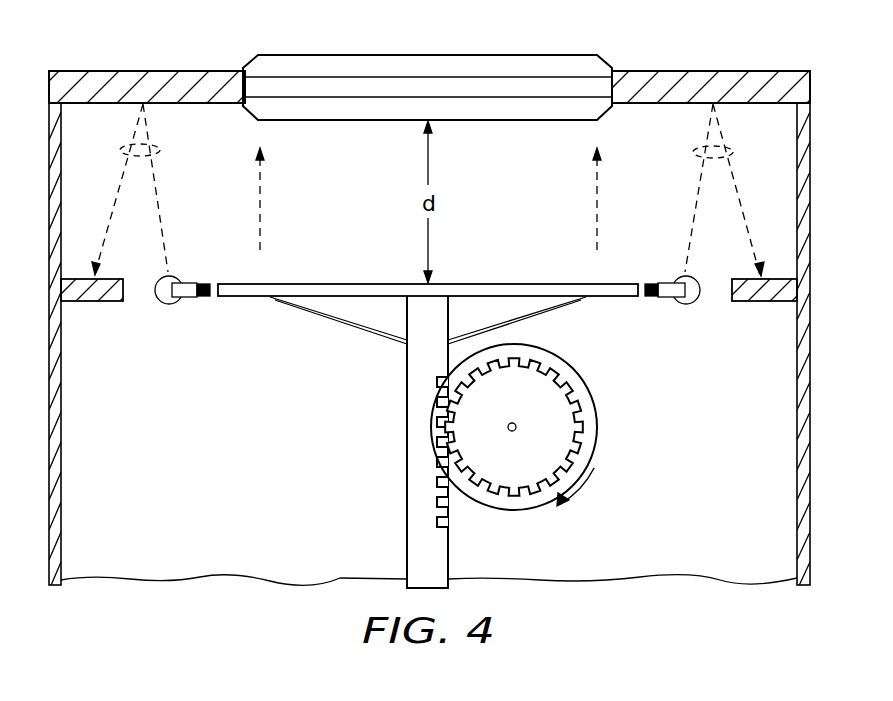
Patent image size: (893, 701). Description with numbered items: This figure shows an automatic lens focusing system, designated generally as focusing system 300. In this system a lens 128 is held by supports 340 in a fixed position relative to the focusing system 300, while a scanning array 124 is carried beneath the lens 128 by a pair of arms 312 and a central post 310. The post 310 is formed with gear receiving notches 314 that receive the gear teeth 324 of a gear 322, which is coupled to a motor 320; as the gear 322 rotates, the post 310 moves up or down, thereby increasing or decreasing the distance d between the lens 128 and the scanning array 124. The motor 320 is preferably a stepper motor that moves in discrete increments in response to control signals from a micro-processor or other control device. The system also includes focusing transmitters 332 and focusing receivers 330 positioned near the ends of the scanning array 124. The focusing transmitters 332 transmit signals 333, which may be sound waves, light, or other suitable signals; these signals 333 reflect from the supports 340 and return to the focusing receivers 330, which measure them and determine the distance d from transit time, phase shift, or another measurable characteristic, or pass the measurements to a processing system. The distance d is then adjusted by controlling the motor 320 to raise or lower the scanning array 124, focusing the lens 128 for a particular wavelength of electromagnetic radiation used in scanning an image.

The scanning array 124 is at (355, 284).
The lens 128 is at (312, 55).
The focusing system 300 is at (193, 611).
The post 310 is at (407, 445).
The arms 312 is at (333, 325).
The gear receiving notches 314 is at (450, 510).
The motor 320 is at (559, 427).
The gear 322 is at (546, 427).
The gear teeth 324 is at (580, 402).
The focusing receivers 330 is at (95, 301).
The focusing transmitters 332 is at (173, 304).
The signals 333 is at (160, 150).
The supports 340 is at (105, 77).